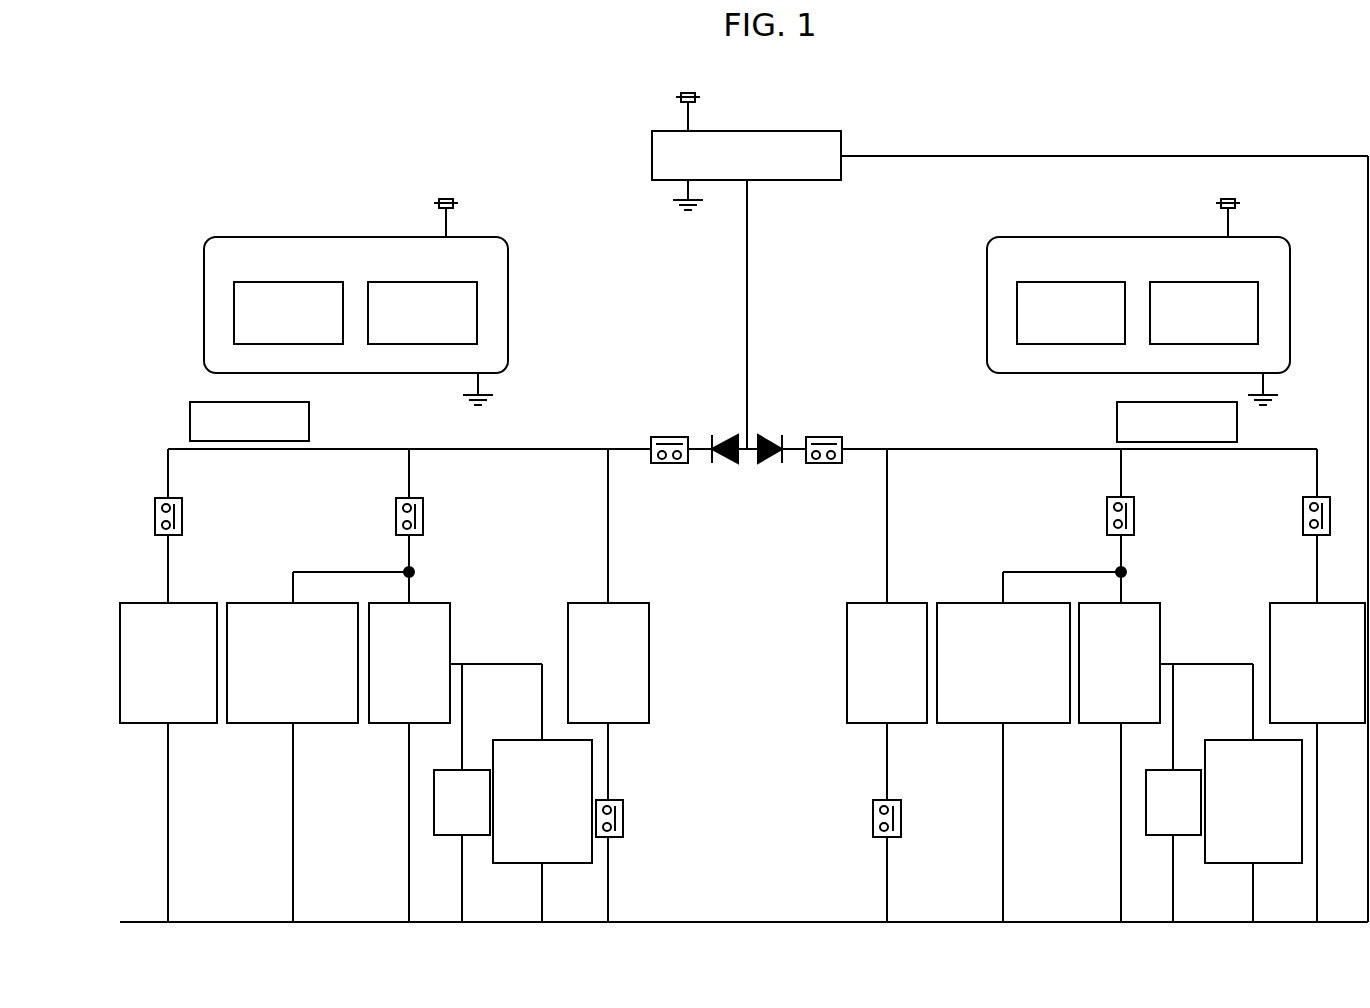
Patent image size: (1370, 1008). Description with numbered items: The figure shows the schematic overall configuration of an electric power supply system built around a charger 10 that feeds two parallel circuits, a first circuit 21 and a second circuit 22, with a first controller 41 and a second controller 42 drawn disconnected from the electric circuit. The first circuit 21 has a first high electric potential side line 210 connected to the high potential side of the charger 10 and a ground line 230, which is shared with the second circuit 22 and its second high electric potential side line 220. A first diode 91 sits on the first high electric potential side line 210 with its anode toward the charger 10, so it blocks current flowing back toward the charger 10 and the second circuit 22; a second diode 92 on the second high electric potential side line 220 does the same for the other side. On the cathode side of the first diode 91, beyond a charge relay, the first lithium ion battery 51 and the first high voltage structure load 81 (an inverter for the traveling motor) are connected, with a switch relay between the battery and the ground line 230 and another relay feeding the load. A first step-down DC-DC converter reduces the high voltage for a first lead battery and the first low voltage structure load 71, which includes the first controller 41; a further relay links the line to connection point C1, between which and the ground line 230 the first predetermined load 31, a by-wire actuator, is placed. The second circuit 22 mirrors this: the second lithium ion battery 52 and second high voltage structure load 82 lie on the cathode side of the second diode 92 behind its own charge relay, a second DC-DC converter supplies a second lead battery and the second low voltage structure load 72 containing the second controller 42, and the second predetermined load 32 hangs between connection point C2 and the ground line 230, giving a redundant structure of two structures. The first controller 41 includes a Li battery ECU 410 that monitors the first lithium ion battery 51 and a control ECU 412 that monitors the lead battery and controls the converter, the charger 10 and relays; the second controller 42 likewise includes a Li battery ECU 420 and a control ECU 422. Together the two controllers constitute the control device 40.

The charger 10 is at (787, 131).
The first circuit 21 is at (414, 641).
The second circuit 22 is at (1074, 641).
The first predetermined load 31 is at (275, 726).
The second predetermined load 32 is at (985, 726).
The control device 40 is at (747, 288).
The first controller 41 is at (412, 288).
The second controller 42 is at (967, 288).
The first lithium ion battery 51 is at (628, 726).
The second lithium ion battery 52 is at (868, 726).
The first low voltage structure load 71 is at (561, 866).
The second low voltage structure load 72 is at (1275, 866).
The first high voltage structure load 81 is at (150, 726).
The second high voltage structure load 82 is at (1335, 726).
The first diode 91 is at (720, 437).
The second diode 92 is at (773, 437).
The first high electric potential side line 210 is at (372, 449).
The second high electric potential side line 220 is at (975, 449).
The ground line 230 is at (762, 920).
The Li battery ECU 410 is at (280, 283).
The control ECU 412 is at (414, 283).
The Li battery ECU 420 is at (1063, 283).
The control ECU 422 is at (1196, 283).
The connection point C1 is at (414, 572).
The connection point C2 is at (1126, 572).